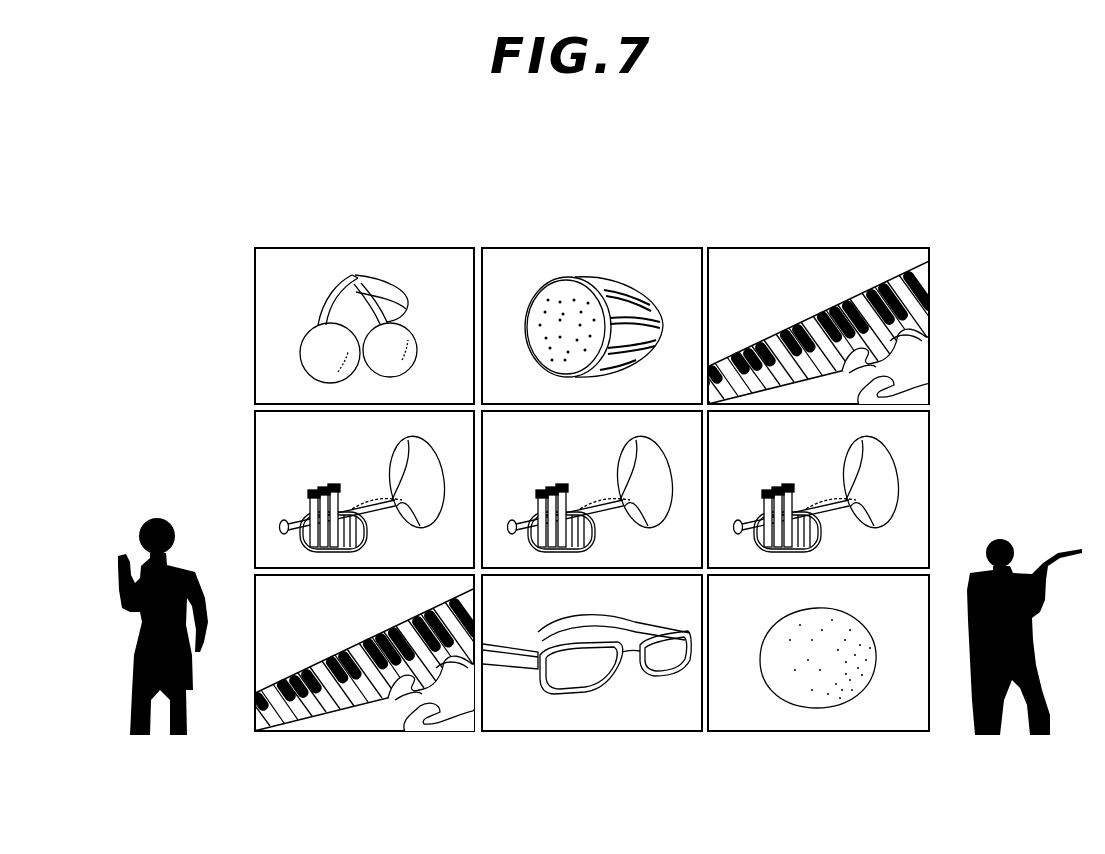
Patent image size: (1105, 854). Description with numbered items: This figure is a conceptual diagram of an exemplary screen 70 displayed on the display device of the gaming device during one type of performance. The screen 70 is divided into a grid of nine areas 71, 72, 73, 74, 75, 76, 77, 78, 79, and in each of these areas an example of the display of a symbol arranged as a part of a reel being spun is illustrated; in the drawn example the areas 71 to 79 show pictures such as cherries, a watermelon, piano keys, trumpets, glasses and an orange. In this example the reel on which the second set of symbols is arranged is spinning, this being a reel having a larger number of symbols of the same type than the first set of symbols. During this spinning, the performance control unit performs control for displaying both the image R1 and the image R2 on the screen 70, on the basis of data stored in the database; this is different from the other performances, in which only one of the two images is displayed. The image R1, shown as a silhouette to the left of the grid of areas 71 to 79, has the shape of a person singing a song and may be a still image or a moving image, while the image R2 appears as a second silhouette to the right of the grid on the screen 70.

The screen 70 is at (906, 226).
The area 71 is at (259, 300).
The area 72 is at (259, 465).
The area 73 is at (259, 635).
The area 74 is at (697, 293).
The area 75 is at (697, 456).
The area 76 is at (697, 624).
The area 77 is at (930, 283).
The area 78 is at (926, 455).
The area 79 is at (925, 623).
The image R1 is at (150, 513).
The image R2 is at (1023, 531).